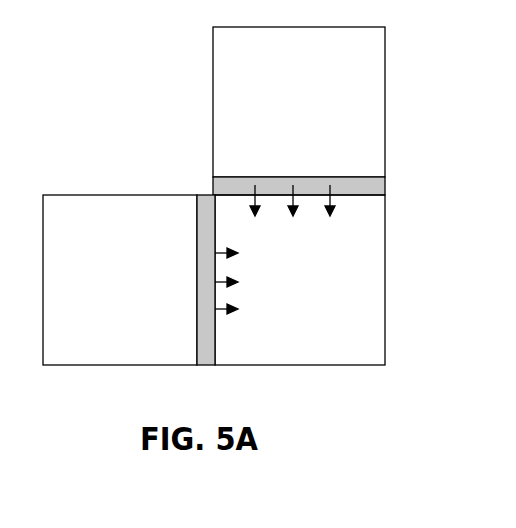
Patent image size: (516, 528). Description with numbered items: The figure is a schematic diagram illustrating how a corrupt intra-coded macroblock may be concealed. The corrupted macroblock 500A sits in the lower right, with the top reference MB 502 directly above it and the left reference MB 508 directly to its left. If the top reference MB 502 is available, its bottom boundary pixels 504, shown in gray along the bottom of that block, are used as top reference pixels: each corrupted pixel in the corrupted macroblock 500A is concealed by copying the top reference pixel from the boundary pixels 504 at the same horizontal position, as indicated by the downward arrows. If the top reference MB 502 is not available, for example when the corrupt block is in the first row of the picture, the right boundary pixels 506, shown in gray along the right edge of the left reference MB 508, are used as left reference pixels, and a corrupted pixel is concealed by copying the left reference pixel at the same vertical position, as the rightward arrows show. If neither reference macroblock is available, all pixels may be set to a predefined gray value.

The top reference MB 502 is at (367, 93).
The bottom boundary pixels 504 is at (367, 185).
The corrupted macroblock 500A is at (367, 293).
The right boundary pixels 506 is at (207, 202).
The left reference MB 508 is at (118, 219).